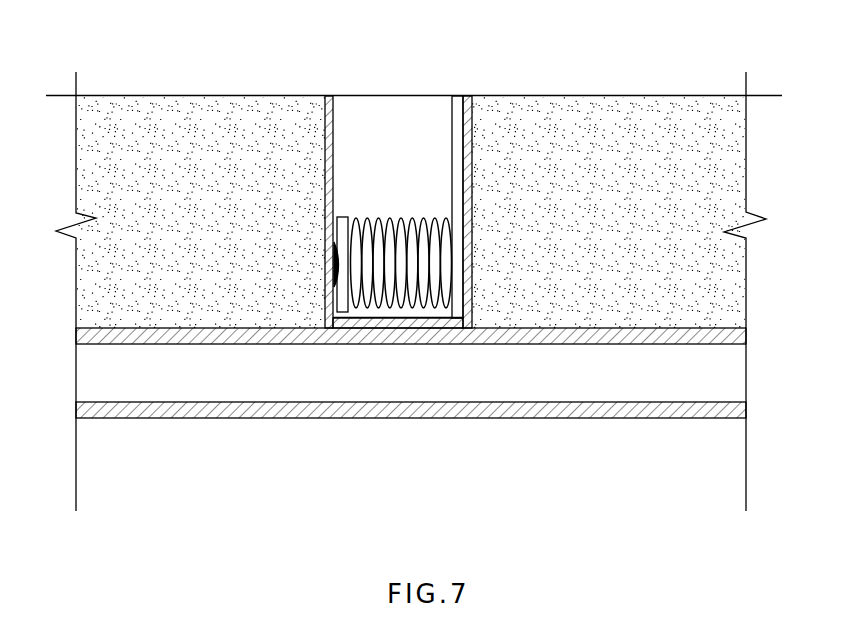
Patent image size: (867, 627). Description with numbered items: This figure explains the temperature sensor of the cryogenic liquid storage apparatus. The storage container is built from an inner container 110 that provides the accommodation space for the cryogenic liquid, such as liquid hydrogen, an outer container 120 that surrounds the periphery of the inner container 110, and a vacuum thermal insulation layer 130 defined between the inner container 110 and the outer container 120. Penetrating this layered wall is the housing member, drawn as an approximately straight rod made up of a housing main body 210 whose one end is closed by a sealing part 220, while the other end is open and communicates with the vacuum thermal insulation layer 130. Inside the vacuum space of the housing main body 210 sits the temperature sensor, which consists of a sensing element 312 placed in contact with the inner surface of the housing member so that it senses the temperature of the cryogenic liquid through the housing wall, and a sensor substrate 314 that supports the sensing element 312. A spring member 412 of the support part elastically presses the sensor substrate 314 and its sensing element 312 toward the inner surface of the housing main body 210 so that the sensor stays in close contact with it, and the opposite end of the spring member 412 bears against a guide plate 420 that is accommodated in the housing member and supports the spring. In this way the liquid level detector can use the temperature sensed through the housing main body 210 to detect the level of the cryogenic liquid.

The inner container 110 is at (76, 336).
The outer container 120 is at (76, 406).
The vacuum thermal insulation layer 130 is at (84, 378).
The housing main body 210 is at (470, 132).
The sealing part 220 is at (434, 323).
The sensing element 312 is at (335, 266).
The sensor substrate 314 is at (343, 310).
The spring 412 is at (375, 309).
The guide plate 420 is at (458, 113).